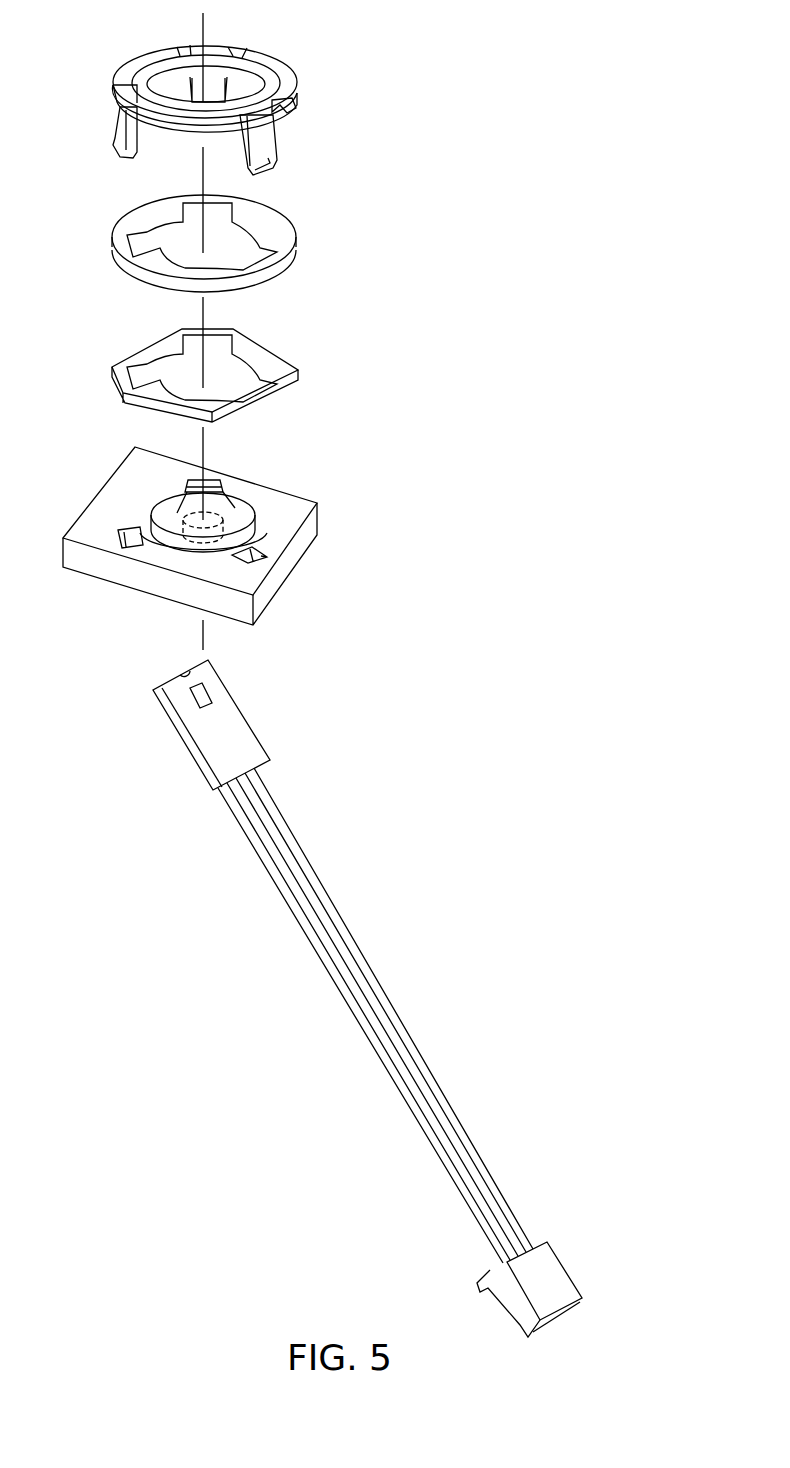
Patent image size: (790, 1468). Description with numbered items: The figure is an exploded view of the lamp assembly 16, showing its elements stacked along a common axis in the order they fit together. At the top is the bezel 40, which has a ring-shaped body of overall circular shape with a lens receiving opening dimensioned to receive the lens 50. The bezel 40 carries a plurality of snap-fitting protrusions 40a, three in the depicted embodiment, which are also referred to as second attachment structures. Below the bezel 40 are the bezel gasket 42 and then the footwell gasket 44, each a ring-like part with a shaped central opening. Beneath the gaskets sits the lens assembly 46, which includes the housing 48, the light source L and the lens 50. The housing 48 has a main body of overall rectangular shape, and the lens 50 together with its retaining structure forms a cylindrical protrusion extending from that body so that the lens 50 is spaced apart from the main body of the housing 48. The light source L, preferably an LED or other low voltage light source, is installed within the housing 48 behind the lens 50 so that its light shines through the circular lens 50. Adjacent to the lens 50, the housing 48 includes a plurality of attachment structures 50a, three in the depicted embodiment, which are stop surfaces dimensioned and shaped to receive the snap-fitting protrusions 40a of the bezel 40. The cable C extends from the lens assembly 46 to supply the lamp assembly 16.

The lamp assembly 16 is at (525, 223).
The bezel 40 is at (282, 78).
The snap-fitting protrusions 40a is at (213, 90).
The bezel gasket 42 is at (282, 218).
The footwell gasket 44 is at (273, 350).
The lens assembly 46 is at (317, 515).
The housing 48 is at (285, 563).
The lens 50 is at (175, 508).
The attachment structures 50a is at (190, 483).
The light source L is at (223, 512).
The cable C is at (345, 923).